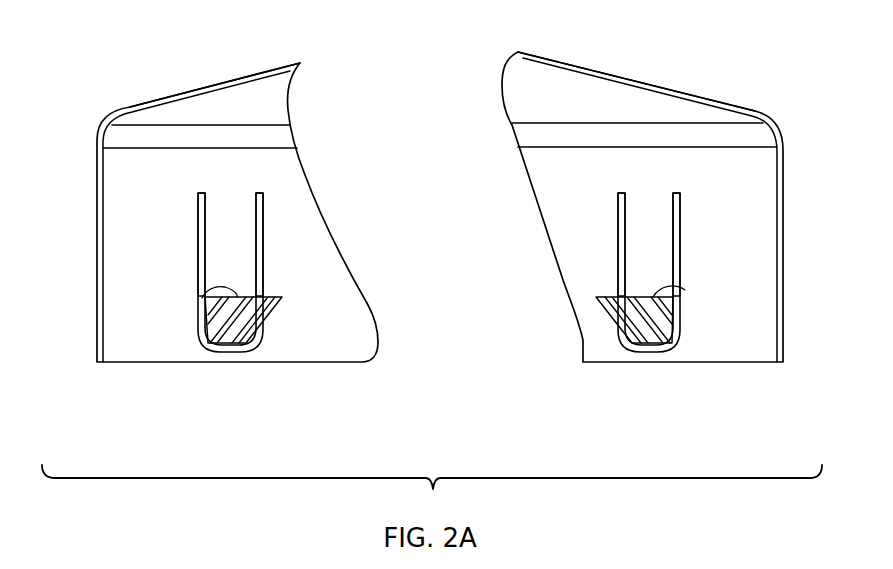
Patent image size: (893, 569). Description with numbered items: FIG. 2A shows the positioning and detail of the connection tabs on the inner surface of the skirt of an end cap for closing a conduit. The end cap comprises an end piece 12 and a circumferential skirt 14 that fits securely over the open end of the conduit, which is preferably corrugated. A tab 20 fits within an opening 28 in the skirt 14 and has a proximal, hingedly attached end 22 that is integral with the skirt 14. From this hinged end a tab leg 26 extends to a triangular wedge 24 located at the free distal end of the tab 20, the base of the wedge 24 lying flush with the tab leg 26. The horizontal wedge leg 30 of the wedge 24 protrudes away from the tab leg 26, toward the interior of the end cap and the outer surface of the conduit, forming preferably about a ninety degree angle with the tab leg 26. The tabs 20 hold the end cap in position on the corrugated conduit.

The end piece 12 is at (180, 92).
The circumferential skirt 14 is at (97, 222).
The connection tab 20 is at (233, 230).
The hingedly attached end 22 is at (228, 205).
The triangular wedge 24 is at (283, 313).
The tab leg 26 is at (198, 248).
The opening 28 is at (199, 268).
The horizontal wedge leg 30 is at (202, 298).